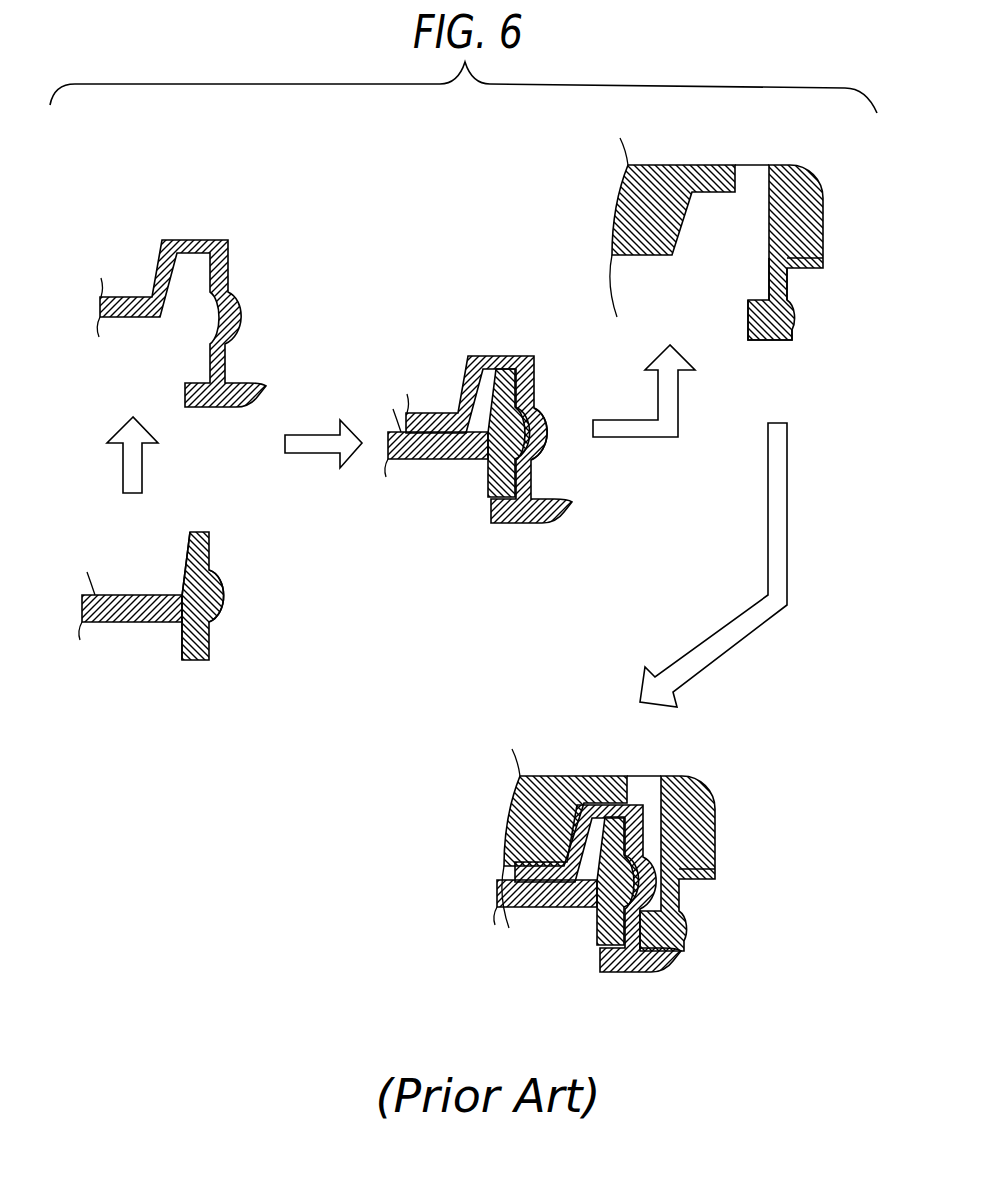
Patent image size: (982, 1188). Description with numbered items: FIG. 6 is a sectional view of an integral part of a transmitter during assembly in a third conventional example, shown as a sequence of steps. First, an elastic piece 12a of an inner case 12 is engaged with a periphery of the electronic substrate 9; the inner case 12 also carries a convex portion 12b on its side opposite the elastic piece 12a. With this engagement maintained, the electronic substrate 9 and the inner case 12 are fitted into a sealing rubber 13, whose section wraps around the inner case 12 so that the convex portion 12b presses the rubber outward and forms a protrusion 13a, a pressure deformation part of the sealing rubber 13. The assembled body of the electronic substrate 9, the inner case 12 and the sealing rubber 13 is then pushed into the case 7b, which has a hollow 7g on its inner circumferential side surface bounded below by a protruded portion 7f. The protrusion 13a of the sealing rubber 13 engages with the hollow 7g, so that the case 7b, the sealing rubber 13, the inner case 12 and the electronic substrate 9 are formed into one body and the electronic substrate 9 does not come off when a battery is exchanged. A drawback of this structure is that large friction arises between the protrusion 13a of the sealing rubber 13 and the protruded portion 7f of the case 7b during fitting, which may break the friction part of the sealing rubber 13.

The case 7b is at (628, 182).
The protruded portion of the case 7f is at (748, 320).
The hollow 7g is at (769, 277).
The electronic substrate 9 is at (124, 625).
The inner case 12 is at (213, 659).
The elastic piece 12a is at (180, 578).
The convex portion 12b is at (217, 574).
The sealing rubber 13 is at (200, 240).
The protrusion of the sealing rubber 13a is at (548, 453).